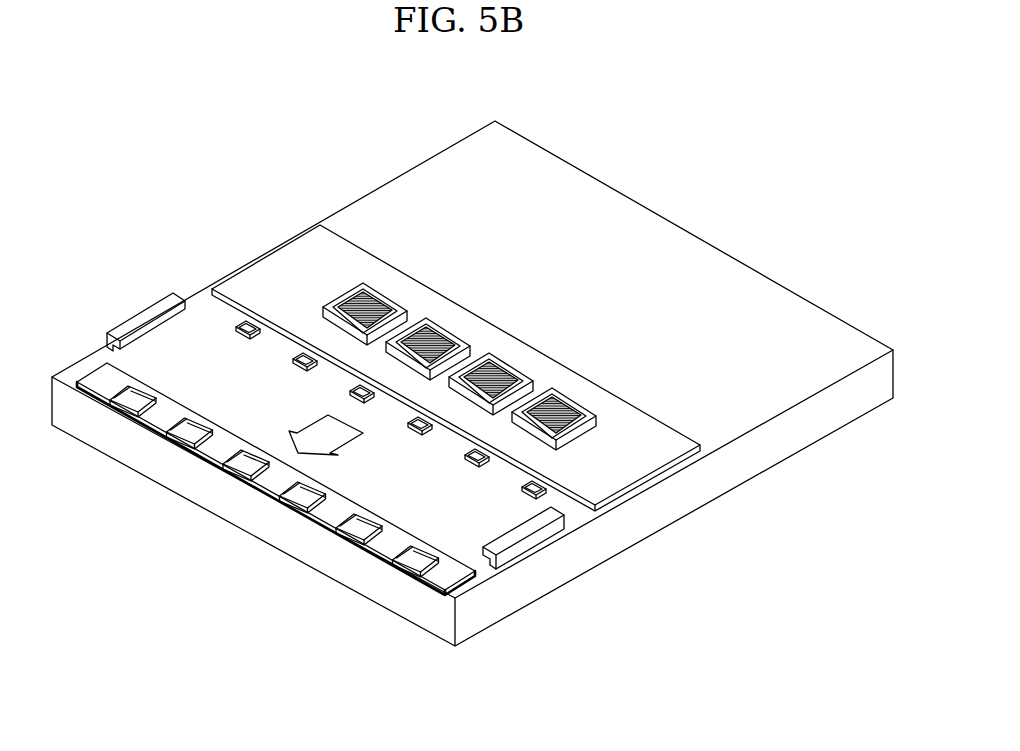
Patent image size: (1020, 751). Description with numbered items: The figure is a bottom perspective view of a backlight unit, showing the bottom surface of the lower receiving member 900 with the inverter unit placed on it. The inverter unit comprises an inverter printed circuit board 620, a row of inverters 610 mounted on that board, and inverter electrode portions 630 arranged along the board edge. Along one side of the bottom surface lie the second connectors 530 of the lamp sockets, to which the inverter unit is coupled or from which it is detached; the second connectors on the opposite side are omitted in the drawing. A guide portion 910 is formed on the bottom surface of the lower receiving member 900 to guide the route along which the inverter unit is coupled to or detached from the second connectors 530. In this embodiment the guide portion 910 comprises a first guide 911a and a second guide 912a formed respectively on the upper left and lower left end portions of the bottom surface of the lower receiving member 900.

The lower receiving member 900 is at (452, 162).
The guide portion 910 is at (473, 437).
The first guide 911a is at (146, 315).
The second guide 912a is at (525, 533).
The inverter printed circuit board 620 is at (288, 259).
The inverters 610 is at (353, 290).
The inverter electrode portions 630 is at (247, 320).
The second connectors 530 is at (288, 503).